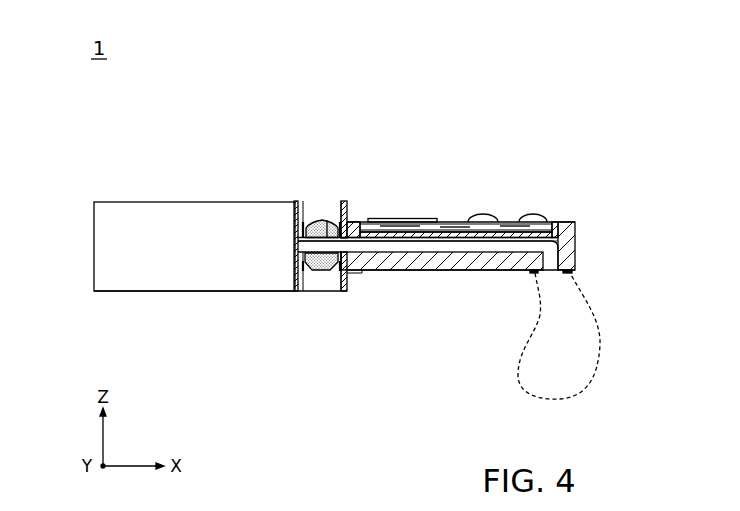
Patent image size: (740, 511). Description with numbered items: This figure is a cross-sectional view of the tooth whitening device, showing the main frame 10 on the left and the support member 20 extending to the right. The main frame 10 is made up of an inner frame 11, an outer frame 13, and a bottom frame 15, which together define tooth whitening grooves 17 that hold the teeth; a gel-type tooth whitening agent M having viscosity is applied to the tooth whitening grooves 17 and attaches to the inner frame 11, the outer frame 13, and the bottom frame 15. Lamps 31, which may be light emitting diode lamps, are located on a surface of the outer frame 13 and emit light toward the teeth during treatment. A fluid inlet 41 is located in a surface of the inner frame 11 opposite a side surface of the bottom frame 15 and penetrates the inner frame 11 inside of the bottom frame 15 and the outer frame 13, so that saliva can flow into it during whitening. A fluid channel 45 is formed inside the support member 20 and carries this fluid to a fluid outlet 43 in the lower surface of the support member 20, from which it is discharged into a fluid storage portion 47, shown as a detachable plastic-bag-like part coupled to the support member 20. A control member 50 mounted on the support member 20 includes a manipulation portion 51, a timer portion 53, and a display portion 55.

The main frame 10 is at (206, 197).
The inner frame 11 is at (297, 292).
The outer frame 13 is at (343, 288).
The bottom frame 15 is at (331, 221).
The tooth whitening grooves 17 is at (323, 279).
The support member 20 is at (572, 223).
The lamps 31 is at (318, 221).
The tooth whitening agent M is at (327, 221).
The fluid inlet 41 is at (299, 246).
The fluid outlet 43 is at (552, 264).
The fluid channel 45 is at (460, 245).
The fluid storage portion 47 is at (520, 362).
The control member 50 is at (528, 135).
The manipulation portion 51 is at (483, 214).
The timer portion 53 is at (533, 214).
The display portion 55 is at (412, 217).